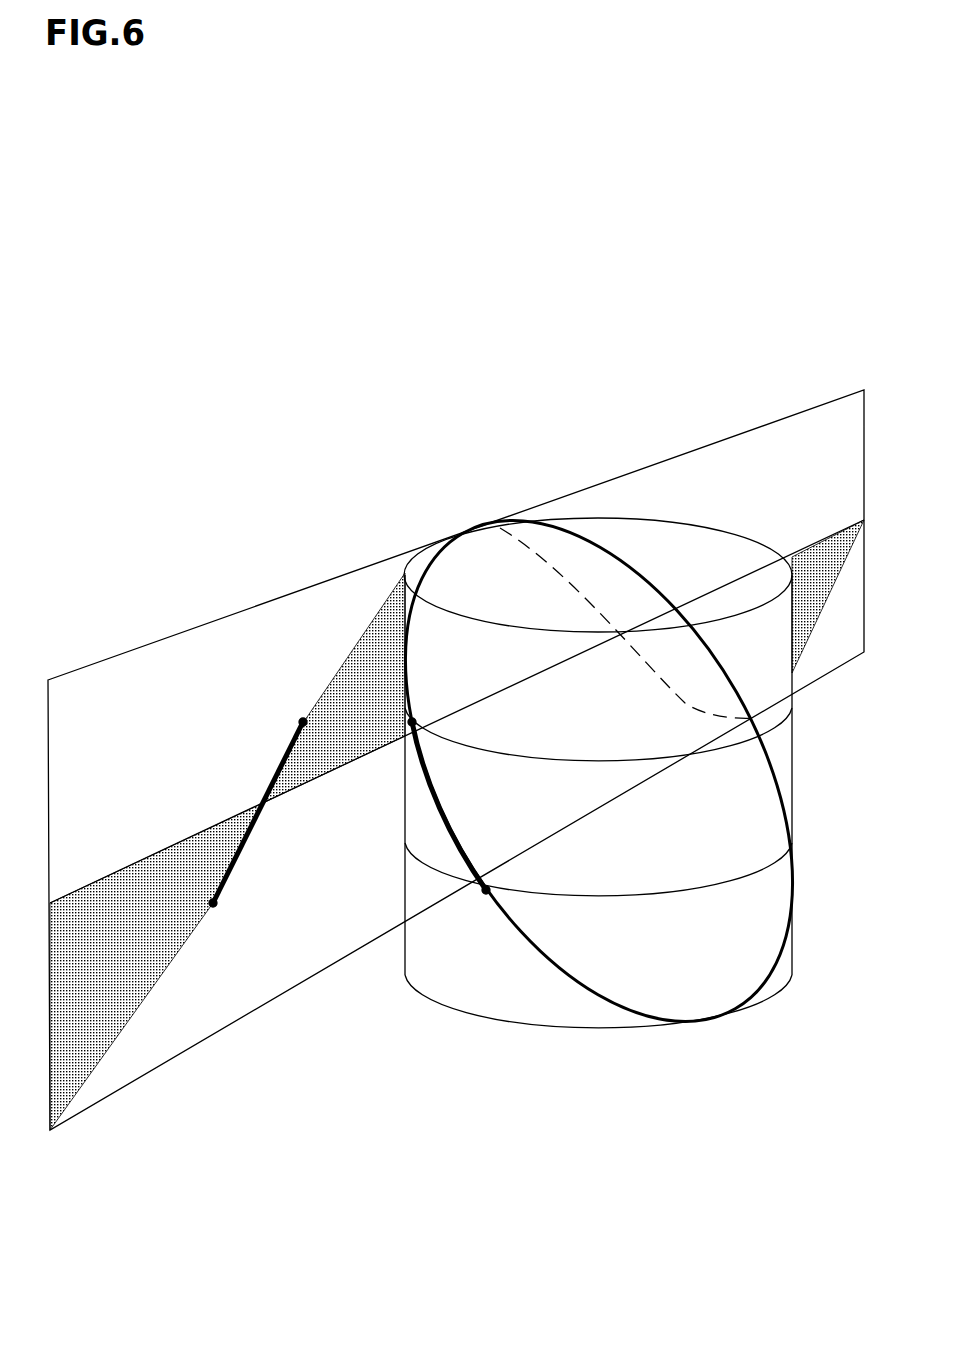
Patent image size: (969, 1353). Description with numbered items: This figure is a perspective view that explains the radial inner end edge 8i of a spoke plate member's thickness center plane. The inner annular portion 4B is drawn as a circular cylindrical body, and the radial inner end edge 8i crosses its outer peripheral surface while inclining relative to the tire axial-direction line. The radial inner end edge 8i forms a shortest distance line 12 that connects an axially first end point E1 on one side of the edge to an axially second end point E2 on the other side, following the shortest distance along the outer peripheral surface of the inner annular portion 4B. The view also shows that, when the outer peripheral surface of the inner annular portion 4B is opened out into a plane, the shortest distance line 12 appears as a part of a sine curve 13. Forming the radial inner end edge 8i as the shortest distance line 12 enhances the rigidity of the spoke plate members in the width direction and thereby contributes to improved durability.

The sine curve 13 is at (258, 800).
The inner annular portion 4B is at (703, 890).
The shortest distance line 12 is at (428, 787).
The radial inner end edge 8i is at (288, 752).
The axially second end point E2 is at (412, 722).
The axially first end point E1 is at (213, 903).